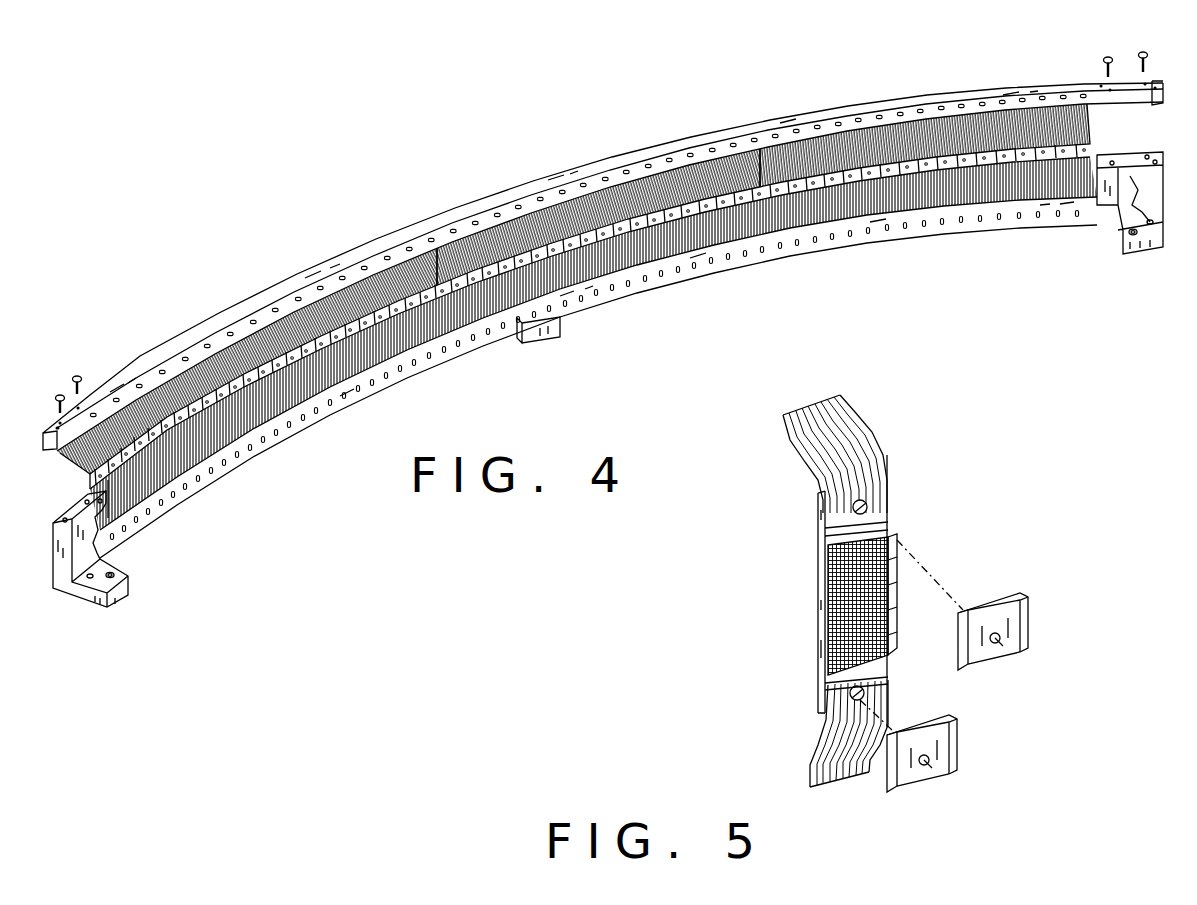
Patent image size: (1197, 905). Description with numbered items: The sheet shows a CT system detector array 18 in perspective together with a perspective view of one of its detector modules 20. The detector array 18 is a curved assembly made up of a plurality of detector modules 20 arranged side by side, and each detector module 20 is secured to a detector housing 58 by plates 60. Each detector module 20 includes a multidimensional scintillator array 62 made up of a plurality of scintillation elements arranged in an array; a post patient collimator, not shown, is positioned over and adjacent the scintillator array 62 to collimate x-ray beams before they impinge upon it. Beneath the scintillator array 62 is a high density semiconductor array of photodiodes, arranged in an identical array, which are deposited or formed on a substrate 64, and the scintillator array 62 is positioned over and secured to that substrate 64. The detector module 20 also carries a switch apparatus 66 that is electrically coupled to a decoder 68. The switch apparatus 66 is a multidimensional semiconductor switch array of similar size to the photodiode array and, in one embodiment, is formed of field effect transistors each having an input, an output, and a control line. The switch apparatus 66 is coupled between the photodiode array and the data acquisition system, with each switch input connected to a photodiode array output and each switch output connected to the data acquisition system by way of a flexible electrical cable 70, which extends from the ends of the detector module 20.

In FIG. 4, the detector array 18 is at (781, 95).
In FIG. 4, the detector module 20 is at (847, 200).
In FIG. 5, the detector module 20 is at (979, 556).
In FIG. 4, the detector housing 58 is at (587, 166).
In FIG. 5, the plates 60 is at (1028, 625).
In FIG. 5, the scintillator array 62 is at (908, 571).
In FIG. 5, the substrate 64 is at (820, 638).
In FIG. 5, the switch apparatus 66 is at (828, 543).
In FIG. 5, the decoder 68 is at (825, 557).
In FIG. 5, the flexible electrical cable 70 is at (860, 440).